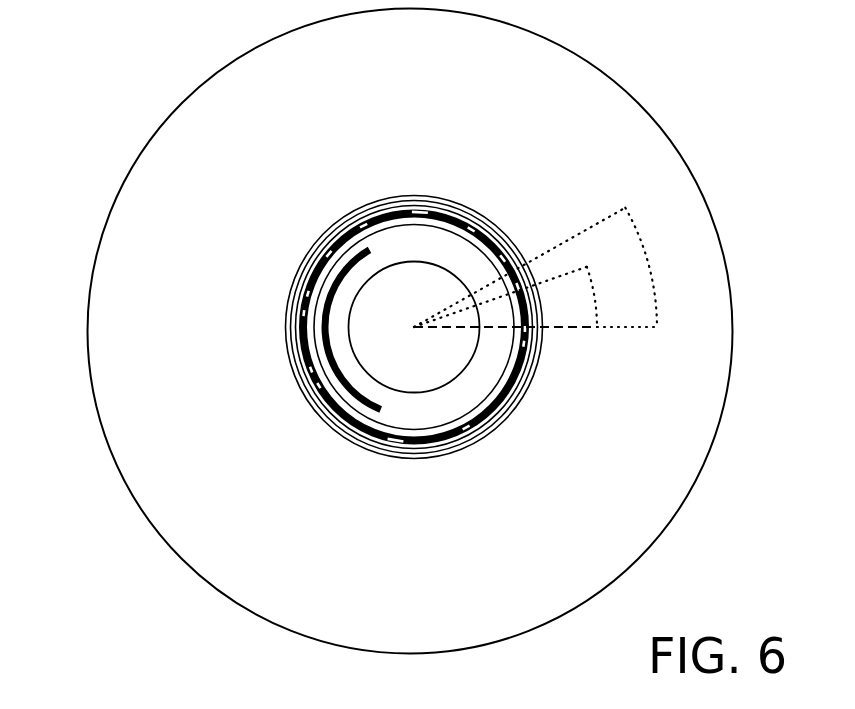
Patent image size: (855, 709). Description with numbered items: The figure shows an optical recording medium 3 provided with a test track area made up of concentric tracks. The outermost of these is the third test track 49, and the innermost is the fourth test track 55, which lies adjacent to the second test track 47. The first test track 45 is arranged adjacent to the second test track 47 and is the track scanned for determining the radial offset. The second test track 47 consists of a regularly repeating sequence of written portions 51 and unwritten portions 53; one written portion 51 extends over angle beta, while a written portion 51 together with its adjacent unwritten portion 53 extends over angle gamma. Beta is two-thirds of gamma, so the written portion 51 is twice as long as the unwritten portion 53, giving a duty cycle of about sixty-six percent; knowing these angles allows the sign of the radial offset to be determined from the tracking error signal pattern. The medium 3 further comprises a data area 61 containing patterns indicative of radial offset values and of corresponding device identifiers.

The optical recording medium 3 is at (693, 175).
The first test track 45 is at (341, 217).
The third test track 49 is at (300, 267).
The fourth test track 55 is at (497, 397).
The second test track 47 is at (318, 397).
The data area 61 is at (323, 325).
The written portion 51 is at (540, 312).
The unwritten portion 53 is at (522, 263).